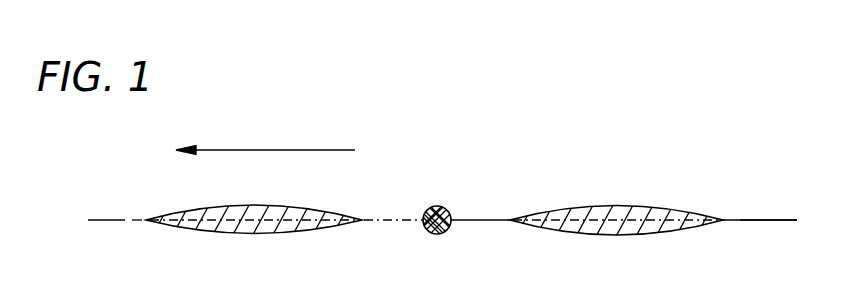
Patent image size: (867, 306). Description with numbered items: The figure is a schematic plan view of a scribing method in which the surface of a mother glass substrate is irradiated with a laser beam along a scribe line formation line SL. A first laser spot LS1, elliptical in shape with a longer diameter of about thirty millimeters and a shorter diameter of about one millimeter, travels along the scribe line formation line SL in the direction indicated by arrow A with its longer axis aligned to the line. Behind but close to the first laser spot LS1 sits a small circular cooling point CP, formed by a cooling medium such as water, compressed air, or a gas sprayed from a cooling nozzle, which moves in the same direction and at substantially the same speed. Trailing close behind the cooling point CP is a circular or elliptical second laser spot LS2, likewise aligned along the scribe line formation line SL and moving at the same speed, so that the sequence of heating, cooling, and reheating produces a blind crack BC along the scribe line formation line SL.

The scribe line formation line SL is at (93, 219).
The arrow A is at (251, 153).
The first laser spot LS1 is at (312, 214).
The cooling point CP is at (438, 208).
The second laser spot LS2 is at (632, 212).
The blind crack BC is at (760, 219).